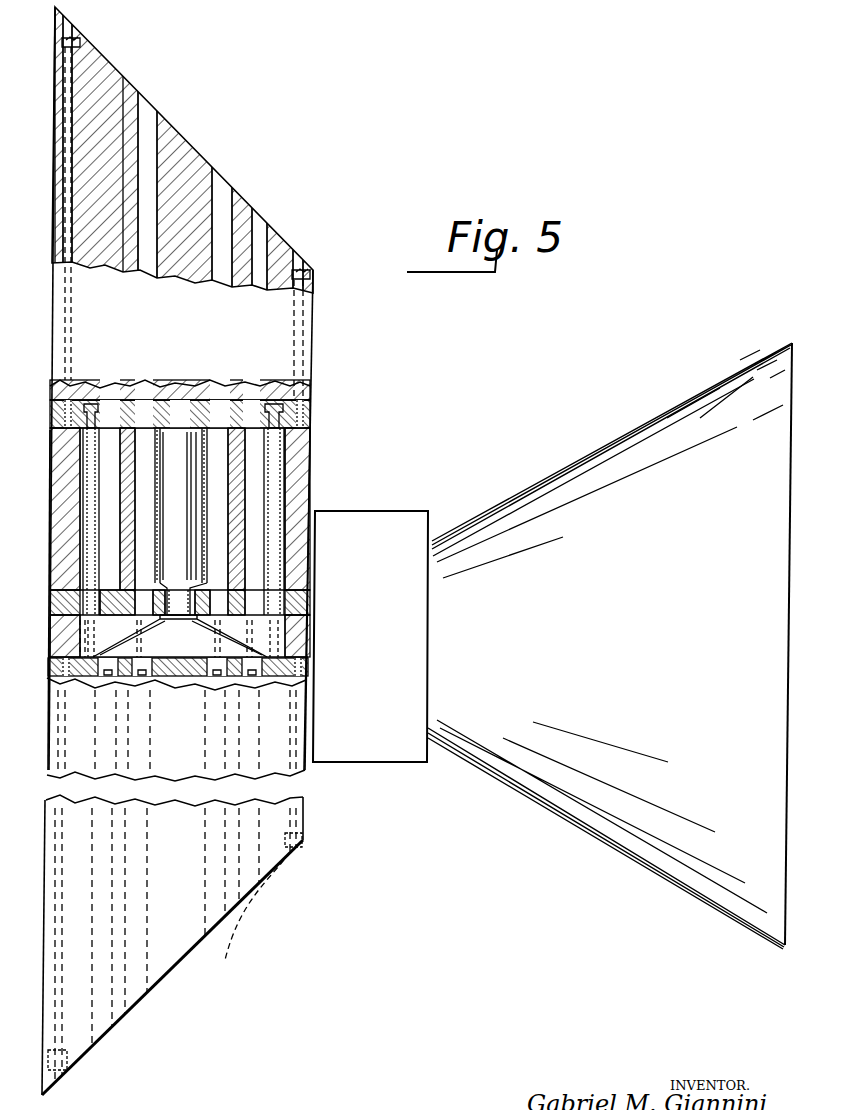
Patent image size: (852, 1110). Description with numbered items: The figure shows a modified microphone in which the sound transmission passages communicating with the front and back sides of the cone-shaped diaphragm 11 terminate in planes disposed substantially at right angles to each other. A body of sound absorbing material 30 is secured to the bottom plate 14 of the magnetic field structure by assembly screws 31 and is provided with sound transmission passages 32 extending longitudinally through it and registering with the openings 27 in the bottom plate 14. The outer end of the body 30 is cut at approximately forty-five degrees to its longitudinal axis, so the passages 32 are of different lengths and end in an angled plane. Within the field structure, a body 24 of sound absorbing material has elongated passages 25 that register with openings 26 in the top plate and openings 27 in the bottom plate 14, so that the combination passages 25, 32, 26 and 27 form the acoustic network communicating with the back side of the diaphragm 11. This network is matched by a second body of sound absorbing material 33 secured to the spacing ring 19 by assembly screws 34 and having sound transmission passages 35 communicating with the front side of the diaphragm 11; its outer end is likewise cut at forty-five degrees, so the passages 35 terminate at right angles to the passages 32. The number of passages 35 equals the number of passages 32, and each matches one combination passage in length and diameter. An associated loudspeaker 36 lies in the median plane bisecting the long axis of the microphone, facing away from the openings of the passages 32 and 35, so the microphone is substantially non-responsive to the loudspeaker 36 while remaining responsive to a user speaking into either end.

The cone-shaped diaphragm 11 is at (155, 632).
The bottom plate 14 is at (311, 420).
The annular spacing ring 19 is at (47, 665).
The body of sound absorbing material 24 is at (281, 493).
The elongated passages 25 is at (254, 468).
The openings in top plate 26 is at (103, 587).
The openings in bottom plate 27 is at (253, 413).
The body of sound absorbing material 30 is at (313, 330).
The assembly screws 31 is at (80, 40).
The sound transmission passages 32 is at (253, 225).
The second body of sound absorbing material 33 is at (303, 827).
The assembly screws 34 is at (302, 850).
The sound transmission passages 35 is at (140, 997).
The loudspeaker 36 is at (412, 522).